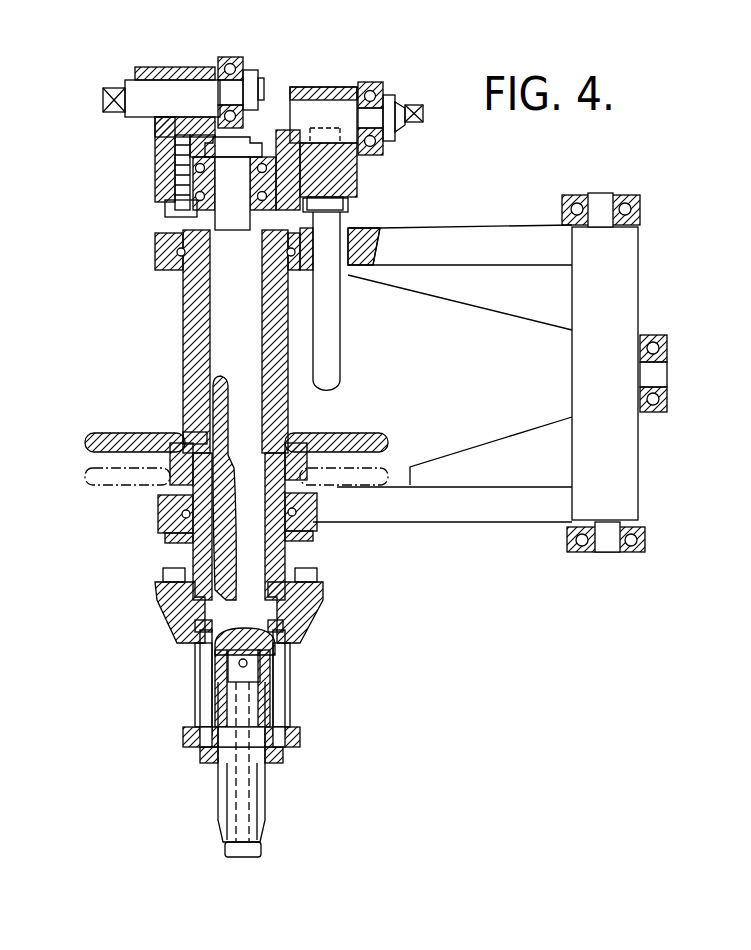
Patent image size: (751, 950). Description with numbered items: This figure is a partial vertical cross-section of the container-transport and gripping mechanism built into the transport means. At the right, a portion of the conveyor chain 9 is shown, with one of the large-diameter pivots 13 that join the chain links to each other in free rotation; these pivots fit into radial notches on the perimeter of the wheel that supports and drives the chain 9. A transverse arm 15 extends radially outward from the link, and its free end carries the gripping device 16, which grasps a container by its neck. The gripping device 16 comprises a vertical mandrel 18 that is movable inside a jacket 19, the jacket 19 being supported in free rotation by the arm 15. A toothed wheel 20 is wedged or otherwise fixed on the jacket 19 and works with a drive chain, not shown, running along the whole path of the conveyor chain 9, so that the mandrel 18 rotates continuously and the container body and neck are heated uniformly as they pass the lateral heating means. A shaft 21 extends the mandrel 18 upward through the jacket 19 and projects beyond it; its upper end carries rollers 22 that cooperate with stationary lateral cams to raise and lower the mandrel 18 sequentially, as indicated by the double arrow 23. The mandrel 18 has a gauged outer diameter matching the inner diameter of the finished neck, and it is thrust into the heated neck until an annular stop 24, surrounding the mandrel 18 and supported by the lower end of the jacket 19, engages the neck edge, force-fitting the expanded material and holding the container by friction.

The conveyor chain 9 is at (654, 466).
The large-diameter pivot 13 is at (617, 283).
The transverse arm 15 is at (456, 510).
The gripping device 16 is at (343, 606).
The vertical mandrel 18 is at (266, 807).
The jacket 19 is at (193, 376).
The toothed wheel 20 is at (109, 443).
The shaft 21 is at (230, 318).
The rollers 22 is at (234, 58).
The double arrow 23 is at (327, 67).
The annular stop 24 is at (284, 763).